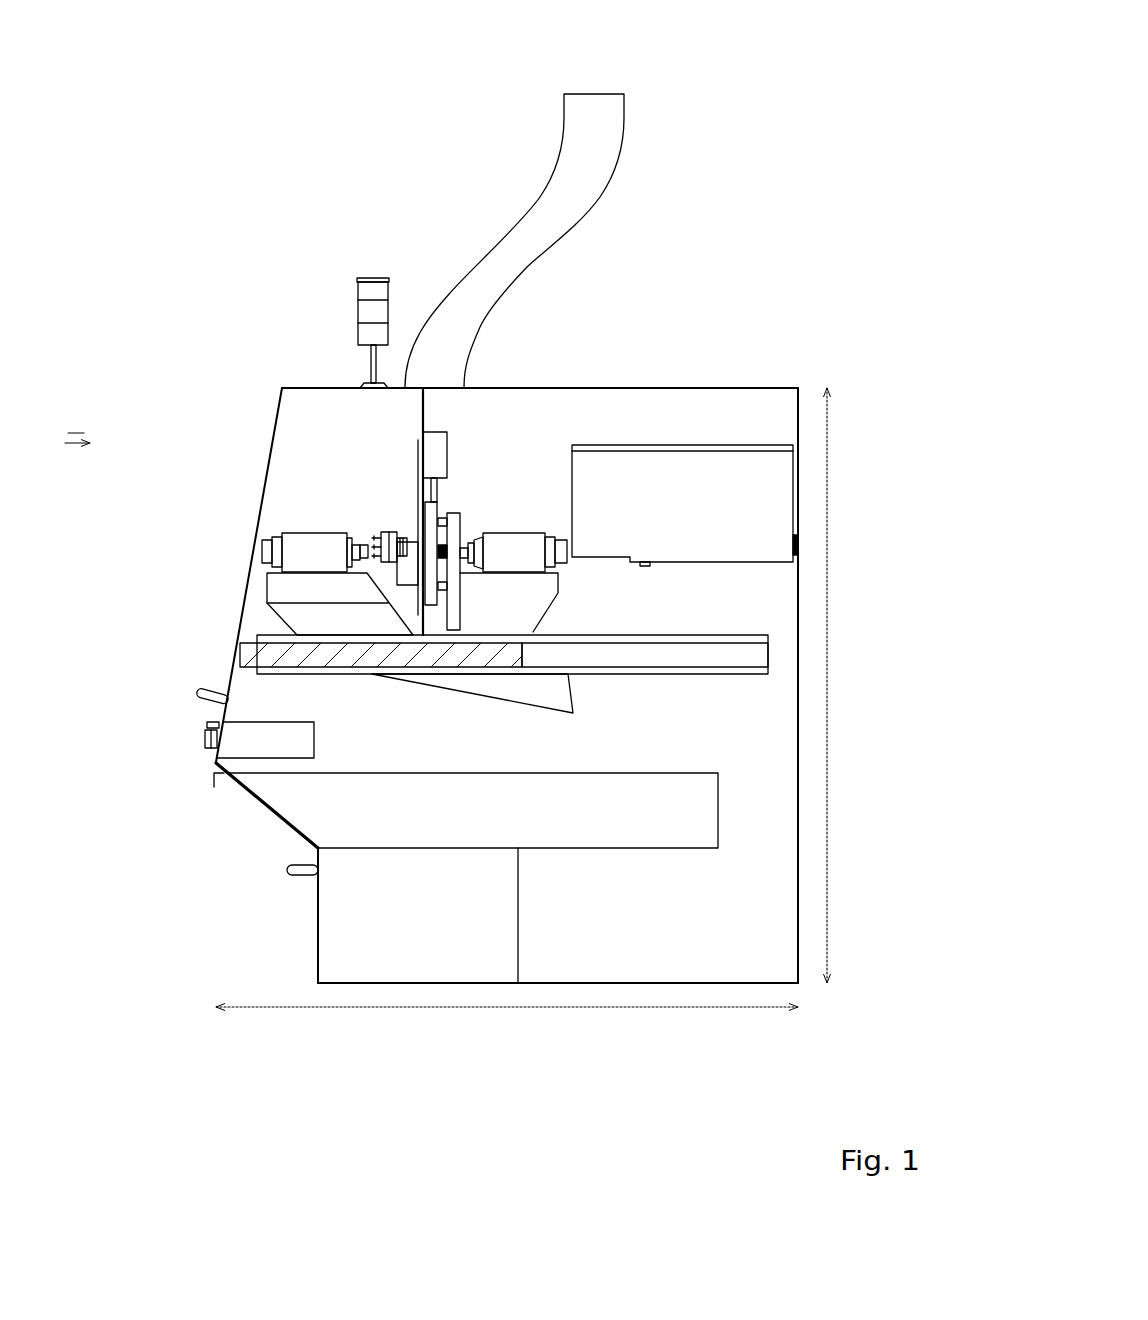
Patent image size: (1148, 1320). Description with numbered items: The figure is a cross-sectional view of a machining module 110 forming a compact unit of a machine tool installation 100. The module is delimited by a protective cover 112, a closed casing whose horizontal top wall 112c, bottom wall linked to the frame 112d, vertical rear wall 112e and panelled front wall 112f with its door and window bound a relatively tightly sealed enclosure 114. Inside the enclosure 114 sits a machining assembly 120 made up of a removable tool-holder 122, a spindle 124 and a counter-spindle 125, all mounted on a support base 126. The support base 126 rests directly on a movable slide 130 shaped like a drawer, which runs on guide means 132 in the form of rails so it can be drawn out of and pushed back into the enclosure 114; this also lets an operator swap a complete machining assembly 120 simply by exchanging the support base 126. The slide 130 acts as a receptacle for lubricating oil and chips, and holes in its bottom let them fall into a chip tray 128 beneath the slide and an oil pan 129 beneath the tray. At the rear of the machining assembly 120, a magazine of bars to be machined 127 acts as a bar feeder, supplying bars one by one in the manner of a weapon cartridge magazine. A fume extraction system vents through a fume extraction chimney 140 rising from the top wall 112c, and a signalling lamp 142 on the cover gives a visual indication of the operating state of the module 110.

The machine tool 100 is at (813, 163).
The machining module 110 is at (815, 358).
The protective cover 112 is at (710, 390).
The top wall 112c is at (617, 387).
The bottom wall linked to the frame 112d is at (588, 983).
The rear wall 112e is at (798, 732).
The front wall 112f is at (282, 822).
The enclosure 114 is at (534, 494).
The machining assembly 120 is at (500, 418).
The tool-holder 122 is at (393, 537).
The spindle 124 is at (694, 594).
The counter-spindle 125 is at (315, 542).
The support base 126 is at (300, 595).
The magazine of bars to be machined 127 is at (757, 493).
The chip tray 128 is at (540, 826).
The oil pan 129 is at (445, 931).
The movable slide 130 is at (272, 670).
The guide means 132 is at (257, 655).
The fume extraction chimney 140 is at (598, 177).
The signalling lamp 142 is at (357, 310).